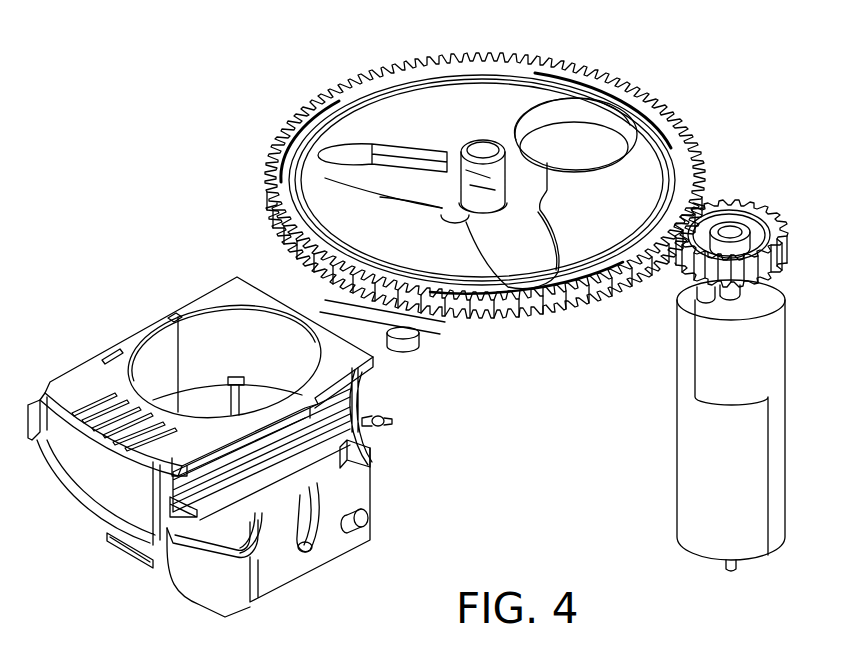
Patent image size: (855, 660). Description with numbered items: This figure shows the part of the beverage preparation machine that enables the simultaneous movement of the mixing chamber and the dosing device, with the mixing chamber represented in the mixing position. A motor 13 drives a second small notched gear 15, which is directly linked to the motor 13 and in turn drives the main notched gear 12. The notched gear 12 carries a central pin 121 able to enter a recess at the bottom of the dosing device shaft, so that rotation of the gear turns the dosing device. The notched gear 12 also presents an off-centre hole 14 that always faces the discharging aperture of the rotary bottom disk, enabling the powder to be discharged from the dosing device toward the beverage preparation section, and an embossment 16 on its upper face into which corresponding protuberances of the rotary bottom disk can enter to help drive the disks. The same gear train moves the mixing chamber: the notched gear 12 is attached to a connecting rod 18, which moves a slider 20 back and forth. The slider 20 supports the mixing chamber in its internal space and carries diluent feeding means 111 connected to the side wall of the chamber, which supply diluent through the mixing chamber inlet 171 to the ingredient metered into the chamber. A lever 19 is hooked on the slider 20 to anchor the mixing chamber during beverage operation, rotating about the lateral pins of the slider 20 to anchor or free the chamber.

The main notched gear 12 is at (430, 112).
The central pin 121 is at (483, 145).
The off-centre hole 14 is at (585, 135).
The second small notched gear 15 is at (755, 235).
The motor 13 is at (760, 447).
The embossment 16 is at (517, 262).
The connecting rod 18 is at (410, 325).
The mixing chamber inlet 171 is at (203, 332).
The diluent feeding means 111 is at (386, 420).
The slider 20 is at (360, 455).
The lever 19 is at (278, 576).